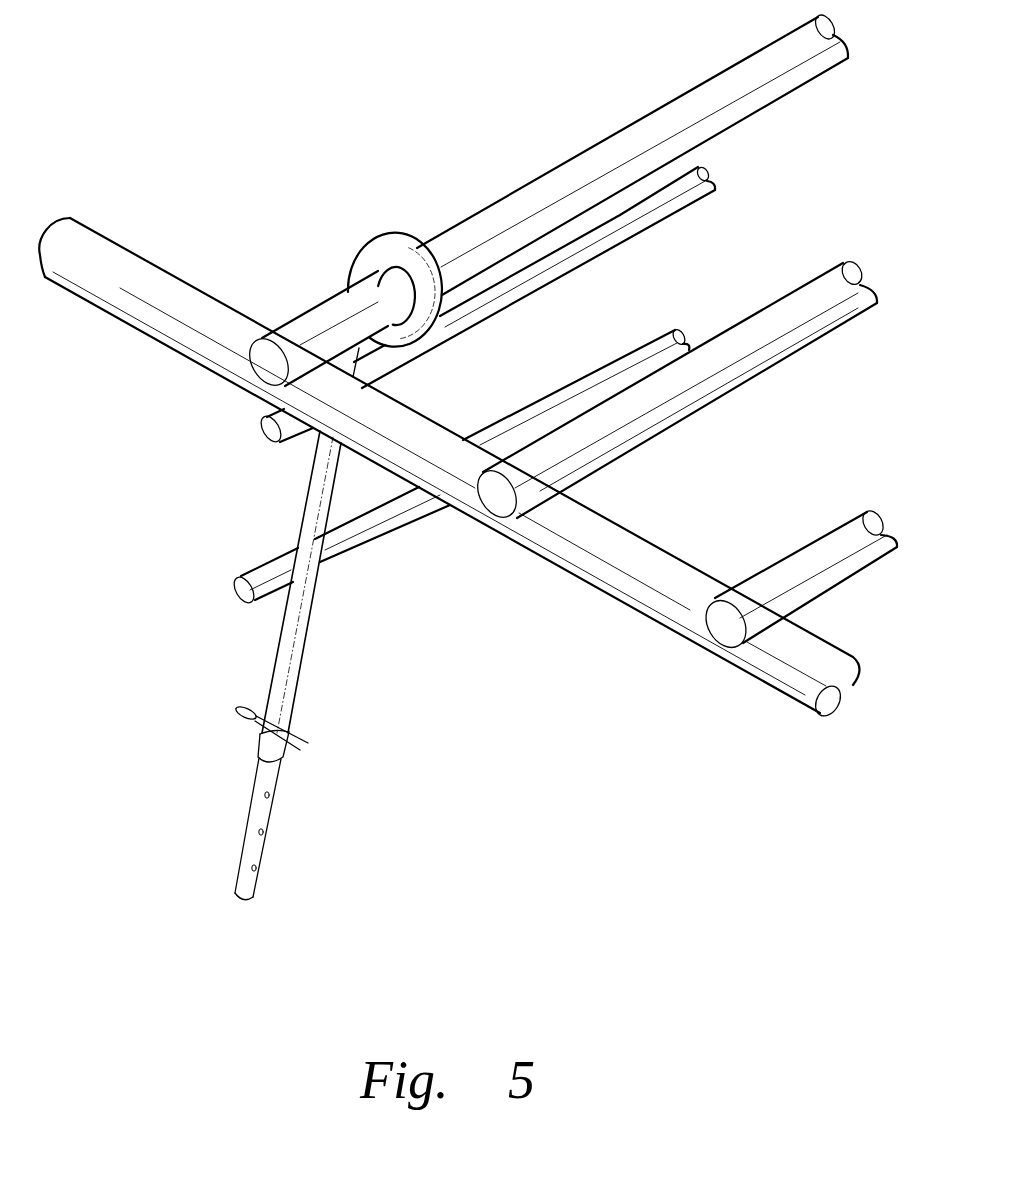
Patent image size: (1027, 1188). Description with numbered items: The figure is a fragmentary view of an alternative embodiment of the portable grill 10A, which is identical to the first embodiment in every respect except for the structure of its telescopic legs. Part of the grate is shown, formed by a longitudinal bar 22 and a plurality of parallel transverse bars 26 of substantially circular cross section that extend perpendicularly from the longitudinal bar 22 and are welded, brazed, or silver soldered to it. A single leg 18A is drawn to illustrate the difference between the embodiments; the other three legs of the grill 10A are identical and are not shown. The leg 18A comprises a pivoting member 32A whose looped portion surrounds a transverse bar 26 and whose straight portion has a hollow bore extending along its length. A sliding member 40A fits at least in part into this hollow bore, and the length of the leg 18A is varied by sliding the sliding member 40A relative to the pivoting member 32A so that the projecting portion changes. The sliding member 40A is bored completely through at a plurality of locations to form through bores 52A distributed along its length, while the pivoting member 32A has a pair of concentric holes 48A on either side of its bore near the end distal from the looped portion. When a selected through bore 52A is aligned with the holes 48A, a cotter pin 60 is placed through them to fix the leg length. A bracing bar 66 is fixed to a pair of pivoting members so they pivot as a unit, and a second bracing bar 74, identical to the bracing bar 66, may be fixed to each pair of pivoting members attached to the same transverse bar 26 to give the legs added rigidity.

The portable grill 10A is at (489, 166).
The longitudinal bar 22 is at (137, 266).
The transverse bar 26 is at (743, 107).
The bracing bar 66 is at (613, 243).
The second bracing bar 74 is at (523, 430).
The leg 18A is at (266, 632).
The pivoting member 32A is at (302, 610).
The sliding member 40A is at (255, 818).
The holes 48A is at (295, 723).
The through bores 52A is at (259, 866).
The cotter pin 60 is at (237, 712).